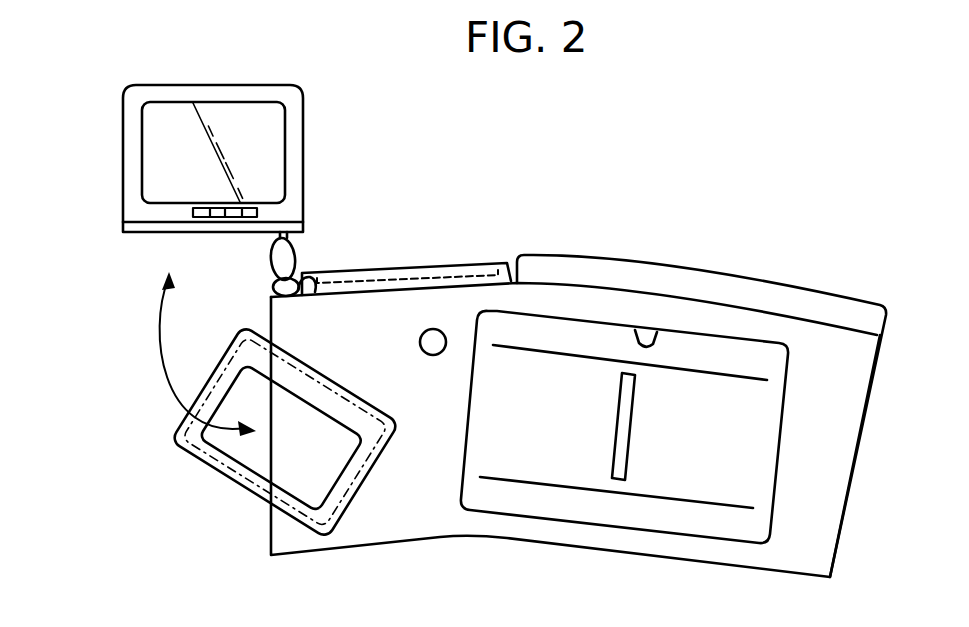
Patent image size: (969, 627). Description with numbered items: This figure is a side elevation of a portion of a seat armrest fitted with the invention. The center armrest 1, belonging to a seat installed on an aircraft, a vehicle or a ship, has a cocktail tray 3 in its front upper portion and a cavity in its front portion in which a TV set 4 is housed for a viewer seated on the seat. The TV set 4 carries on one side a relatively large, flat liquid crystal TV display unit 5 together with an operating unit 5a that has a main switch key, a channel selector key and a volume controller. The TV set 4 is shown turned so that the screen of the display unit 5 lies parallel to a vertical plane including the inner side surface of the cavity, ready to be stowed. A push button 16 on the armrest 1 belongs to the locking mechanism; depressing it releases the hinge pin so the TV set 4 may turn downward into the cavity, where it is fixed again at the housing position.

The center armrest 1 is at (630, 252).
The cocktail tray 3 is at (410, 276).
The TV set 4 is at (110, 165).
The liquid crystal TV display unit 5 is at (182, 117).
The operating unit 5a is at (257, 212).
The push button 16 is at (441, 330).